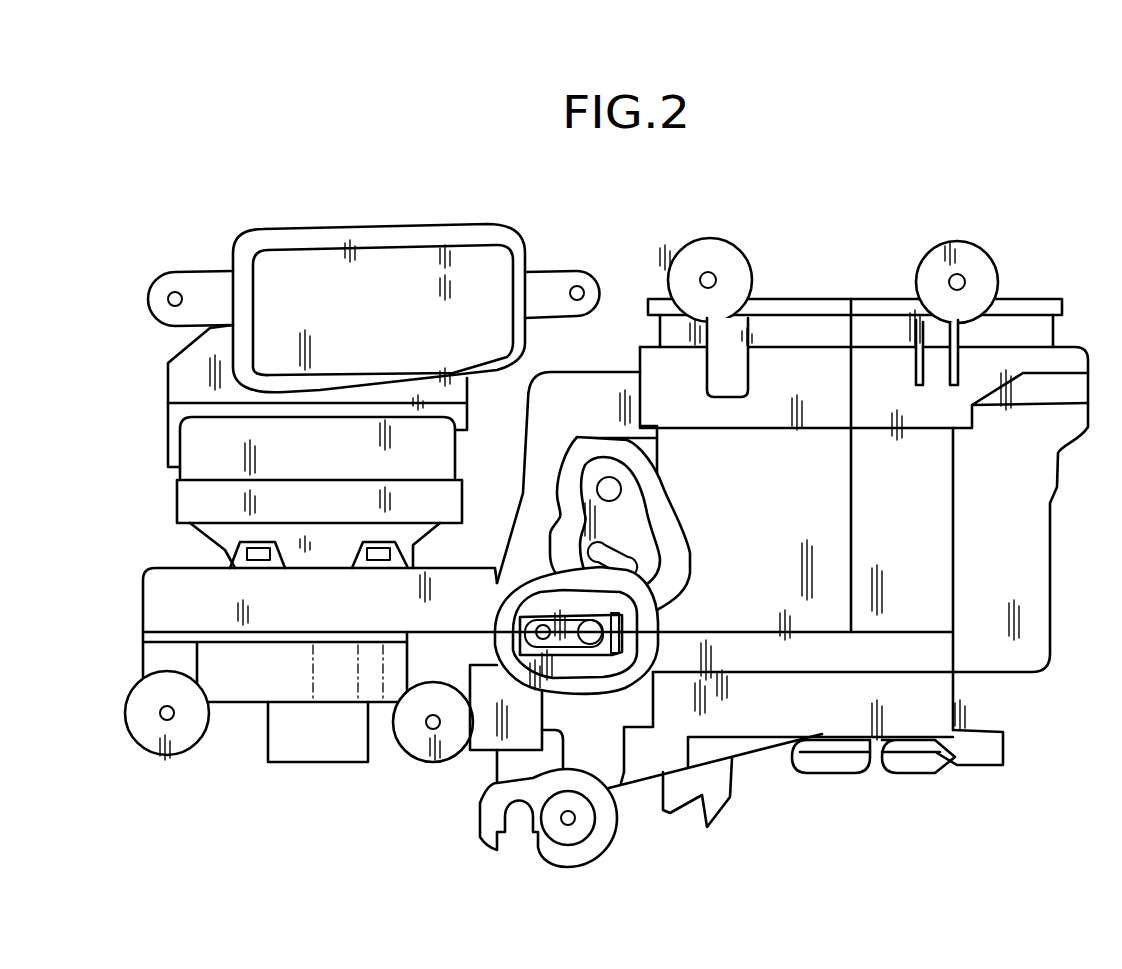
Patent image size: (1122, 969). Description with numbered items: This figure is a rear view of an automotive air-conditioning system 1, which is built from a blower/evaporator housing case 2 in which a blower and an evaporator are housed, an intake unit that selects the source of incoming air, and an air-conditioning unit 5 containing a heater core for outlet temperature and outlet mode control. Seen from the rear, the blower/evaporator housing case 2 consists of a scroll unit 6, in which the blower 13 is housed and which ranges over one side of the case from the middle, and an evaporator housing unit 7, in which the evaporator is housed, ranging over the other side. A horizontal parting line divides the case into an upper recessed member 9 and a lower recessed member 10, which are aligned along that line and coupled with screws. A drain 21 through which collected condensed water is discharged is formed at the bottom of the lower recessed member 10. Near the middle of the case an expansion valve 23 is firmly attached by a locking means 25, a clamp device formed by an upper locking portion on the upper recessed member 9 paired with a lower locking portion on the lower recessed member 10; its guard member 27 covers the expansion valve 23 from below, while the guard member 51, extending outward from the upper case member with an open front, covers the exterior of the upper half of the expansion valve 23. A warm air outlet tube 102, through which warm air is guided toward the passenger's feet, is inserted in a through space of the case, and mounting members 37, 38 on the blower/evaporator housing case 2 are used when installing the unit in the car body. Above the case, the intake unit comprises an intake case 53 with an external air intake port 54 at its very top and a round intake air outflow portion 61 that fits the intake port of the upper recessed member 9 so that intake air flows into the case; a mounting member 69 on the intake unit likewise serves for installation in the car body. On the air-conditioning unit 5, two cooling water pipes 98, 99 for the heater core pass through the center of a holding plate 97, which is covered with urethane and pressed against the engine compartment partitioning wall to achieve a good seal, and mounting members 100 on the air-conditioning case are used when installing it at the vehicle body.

The air-conditioning system 1 is at (347, 334).
The blower/evaporator housing case 2 is at (494, 714).
The air-conditioning unit 5 is at (865, 524).
The scroll unit 6 is at (213, 608).
The evaporator housing unit 7 is at (933, 652).
The upper recessed member 9 is at (877, 653).
The lower recessed member 10 is at (842, 712).
The blower 13 is at (320, 750).
The drain 21 is at (572, 825).
The expansion valve 23 is at (567, 640).
The locking means 25 is at (518, 705).
The guard member 27 is at (608, 640).
The mounting member 37 is at (410, 741).
The mounting member 38 is at (175, 758).
The guard member 51 is at (658, 598).
The intake case 53 is at (212, 448).
The external air intake port 54 is at (383, 258).
The intake air outflow portion 61 is at (310, 553).
The mounting member 69 is at (192, 268).
The holding plate 97 is at (567, 481).
The cooling water pipe 98 is at (611, 477).
The cooling water pipe 99 is at (607, 556).
The mounting member 100 is at (722, 262).
The warm air outlet tube 102 is at (470, 773).